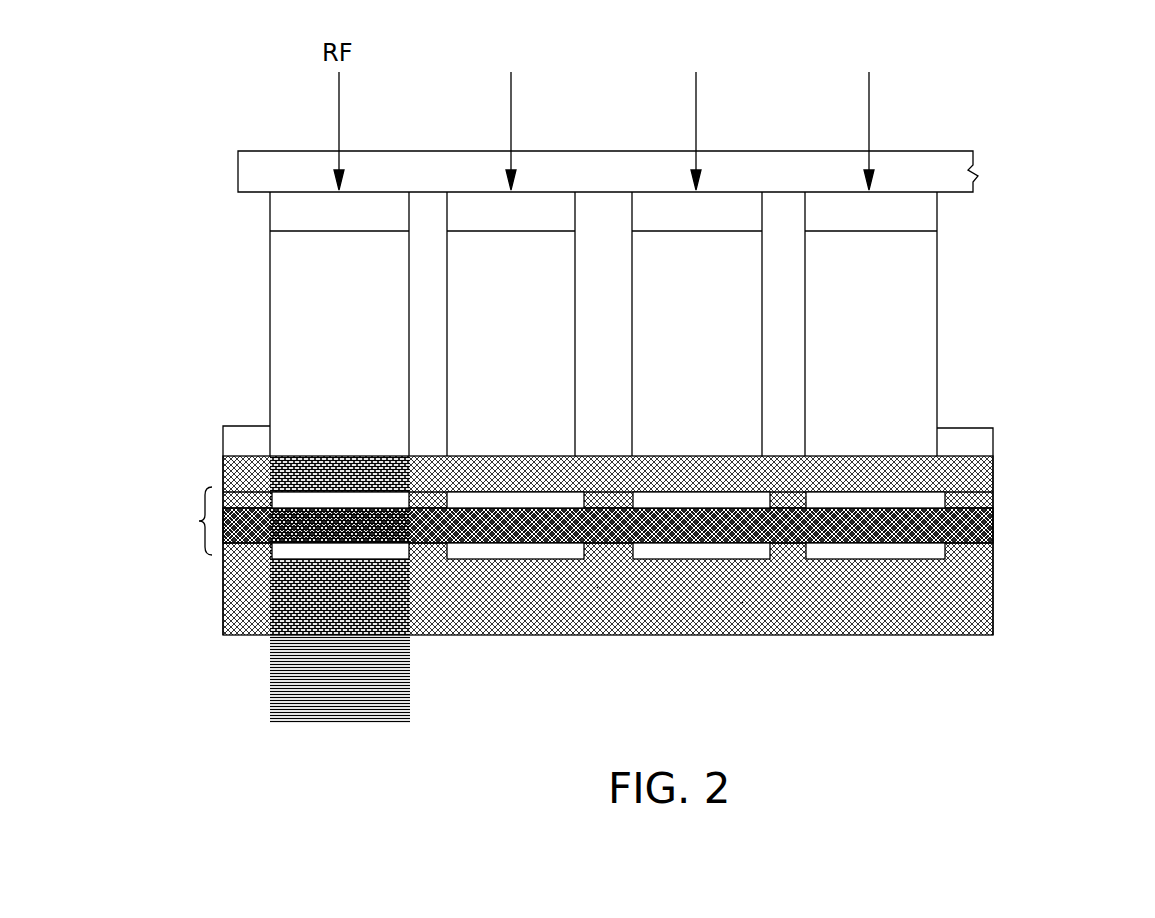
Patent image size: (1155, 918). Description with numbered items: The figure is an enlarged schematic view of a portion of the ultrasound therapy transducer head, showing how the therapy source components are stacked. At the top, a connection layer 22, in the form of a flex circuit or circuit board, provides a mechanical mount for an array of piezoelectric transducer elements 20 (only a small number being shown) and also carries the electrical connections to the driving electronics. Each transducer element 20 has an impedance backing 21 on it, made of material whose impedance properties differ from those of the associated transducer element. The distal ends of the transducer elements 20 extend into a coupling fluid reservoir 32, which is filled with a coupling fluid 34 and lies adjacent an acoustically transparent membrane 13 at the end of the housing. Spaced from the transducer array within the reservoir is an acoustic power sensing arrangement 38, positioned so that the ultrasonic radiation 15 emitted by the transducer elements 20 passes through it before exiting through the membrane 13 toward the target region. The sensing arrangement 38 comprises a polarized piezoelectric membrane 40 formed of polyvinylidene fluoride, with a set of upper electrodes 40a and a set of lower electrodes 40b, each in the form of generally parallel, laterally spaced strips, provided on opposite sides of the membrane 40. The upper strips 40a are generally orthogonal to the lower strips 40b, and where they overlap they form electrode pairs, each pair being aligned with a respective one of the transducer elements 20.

The acoustically transparent membrane 13 is at (848, 636).
The ultrasonic radiation 15 is at (288, 738).
The piezoelectric transducer elements 20 is at (313, 388).
The impedance backing 21 is at (288, 212).
The connection layer 22 is at (976, 170).
The coupling fluid reservoir 32 is at (597, 587).
The coupling fluid 34 is at (742, 602).
The acoustic power sensing arrangement 38 is at (185, 521).
The polarized piezoelectric membrane 40 is at (980, 525).
The upper electrodes 40a is at (545, 496).
The lower electrodes 40b is at (497, 547).